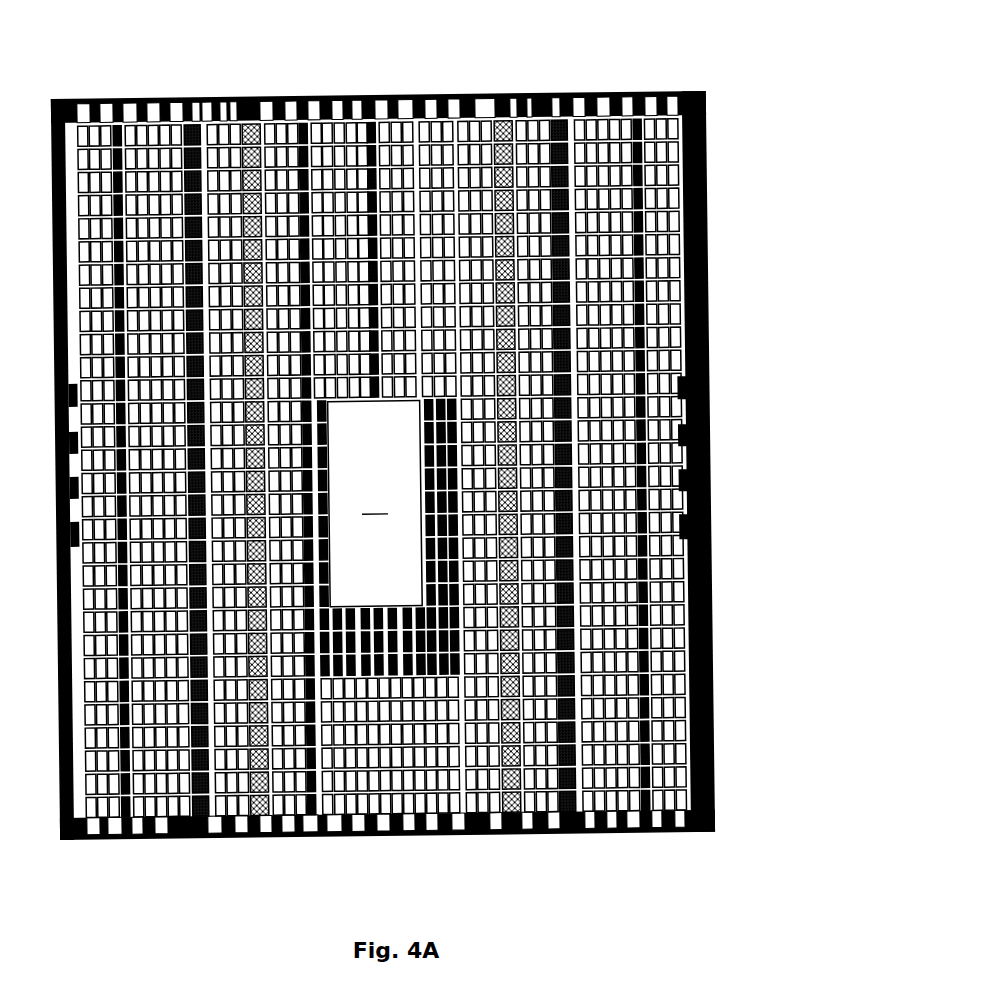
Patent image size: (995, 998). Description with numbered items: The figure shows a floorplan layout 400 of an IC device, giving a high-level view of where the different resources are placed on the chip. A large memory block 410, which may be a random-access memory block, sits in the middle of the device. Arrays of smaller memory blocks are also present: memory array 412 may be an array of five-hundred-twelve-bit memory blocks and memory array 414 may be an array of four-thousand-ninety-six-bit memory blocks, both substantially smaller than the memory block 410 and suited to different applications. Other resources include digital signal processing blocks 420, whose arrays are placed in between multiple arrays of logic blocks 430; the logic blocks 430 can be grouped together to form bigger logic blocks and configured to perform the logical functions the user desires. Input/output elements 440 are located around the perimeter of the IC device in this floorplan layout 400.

The floorplan layout 400 is at (606, 80).
The memory block 410 is at (375, 503).
The memory array 412 is at (385, 125).
The memory array 414 is at (275, 816).
The digital signal processing (DSP) blocks 420 is at (195, 816).
The logic blocks 430 is at (490, 125).
The input/output (I/O) elements 440 is at (175, 108).